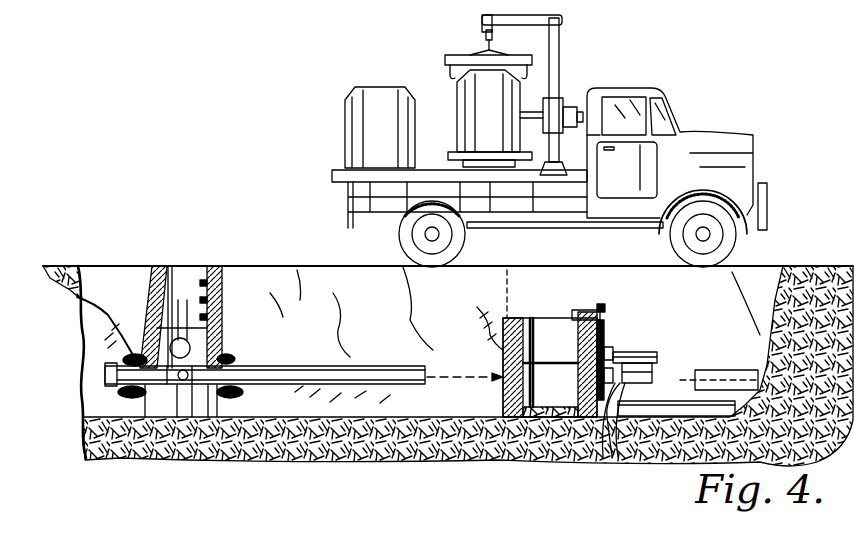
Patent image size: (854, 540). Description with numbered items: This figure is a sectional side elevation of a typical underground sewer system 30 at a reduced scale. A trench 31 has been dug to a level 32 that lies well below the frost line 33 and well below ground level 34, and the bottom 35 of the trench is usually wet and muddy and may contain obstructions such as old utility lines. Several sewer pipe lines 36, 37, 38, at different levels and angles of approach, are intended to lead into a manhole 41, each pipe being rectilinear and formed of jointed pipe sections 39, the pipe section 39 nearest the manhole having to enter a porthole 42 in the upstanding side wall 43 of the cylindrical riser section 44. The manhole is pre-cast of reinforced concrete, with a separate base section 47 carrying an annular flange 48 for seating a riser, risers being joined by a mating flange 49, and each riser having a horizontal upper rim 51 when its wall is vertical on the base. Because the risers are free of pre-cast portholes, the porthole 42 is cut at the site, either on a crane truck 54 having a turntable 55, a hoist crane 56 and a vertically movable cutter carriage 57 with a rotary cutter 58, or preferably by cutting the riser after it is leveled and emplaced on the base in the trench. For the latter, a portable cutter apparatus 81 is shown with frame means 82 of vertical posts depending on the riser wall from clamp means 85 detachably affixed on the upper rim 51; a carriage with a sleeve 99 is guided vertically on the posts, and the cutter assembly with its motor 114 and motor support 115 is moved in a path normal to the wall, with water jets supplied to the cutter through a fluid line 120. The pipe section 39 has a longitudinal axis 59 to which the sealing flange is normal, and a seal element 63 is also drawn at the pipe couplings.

The underground sewer system 30 is at (248, 290).
The trench 31 is at (128, 298).
The level 32 is at (80, 398).
The frost line 33 is at (100, 307).
The ground level 34 is at (68, 265).
The bottom of the trench 35 is at (410, 457).
The sewer pipe line 36 is at (307, 377).
The sewer pipe line 37 is at (208, 350).
The sewer pipe line 38 is at (742, 372).
The pipe section 39 is at (670, 403).
The manhole 41 is at (488, 128).
The porthole 42 is at (117, 352).
The side wall 43 is at (503, 363).
The riser section 44 is at (503, 337).
The base section 47 is at (540, 457).
The annular flange 48 is at (587, 457).
The mating flange 49 is at (530, 340).
The upper rim 51 is at (517, 320).
The crane truck 54 is at (688, 158).
The turntable 55 is at (453, 153).
The hoist crane 56 is at (467, 58).
The cutter carriage 57 is at (565, 107).
The rotary cutter 58 is at (560, 53).
The longitudinal axis 59 is at (445, 375).
The seal 63 is at (100, 356).
The cutter apparatus 81 is at (612, 304).
The frame means 82 is at (598, 304).
The clamp means 85 is at (580, 312).
The sleeve 99 is at (607, 340).
The motor 114 is at (625, 420).
The motor support 115 is at (615, 420).
The fluid line 120 is at (610, 457).